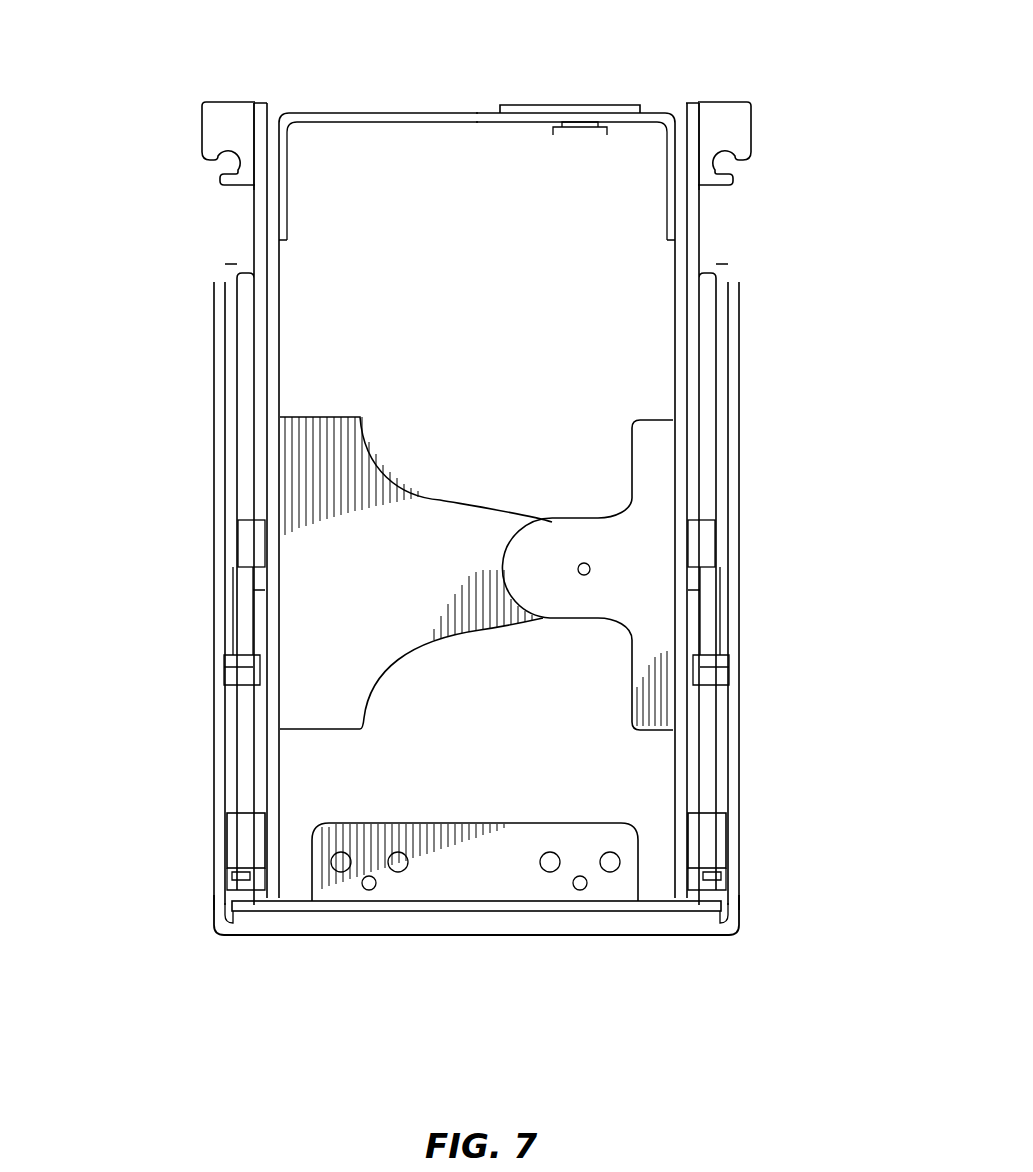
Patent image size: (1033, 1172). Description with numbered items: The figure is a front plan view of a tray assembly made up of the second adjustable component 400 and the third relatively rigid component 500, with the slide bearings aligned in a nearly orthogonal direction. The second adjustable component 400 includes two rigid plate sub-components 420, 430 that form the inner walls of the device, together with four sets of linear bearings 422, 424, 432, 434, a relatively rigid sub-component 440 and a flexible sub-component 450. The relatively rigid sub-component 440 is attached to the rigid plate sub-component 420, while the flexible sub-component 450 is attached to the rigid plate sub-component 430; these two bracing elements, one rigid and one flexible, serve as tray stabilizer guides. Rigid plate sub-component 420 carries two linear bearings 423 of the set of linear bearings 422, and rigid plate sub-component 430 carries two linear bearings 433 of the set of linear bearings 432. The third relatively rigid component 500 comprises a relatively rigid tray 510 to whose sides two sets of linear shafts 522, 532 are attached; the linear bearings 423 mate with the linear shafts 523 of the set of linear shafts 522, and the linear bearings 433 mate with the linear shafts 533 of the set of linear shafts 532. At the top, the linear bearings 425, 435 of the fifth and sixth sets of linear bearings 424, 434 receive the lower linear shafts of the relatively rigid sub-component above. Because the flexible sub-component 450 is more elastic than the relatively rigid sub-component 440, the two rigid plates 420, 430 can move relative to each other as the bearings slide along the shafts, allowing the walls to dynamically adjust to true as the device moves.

The second adjustable component 400 is at (437, 108).
The rigid plate sub-component 420 is at (275, 340).
The rigid plate sub-component 430 is at (684, 335).
The set of linear bearings 422 is at (255, 830).
The set of linear bearings 432 is at (718, 838).
The linear bearings 423 is at (250, 545).
The linear bearings 433 is at (703, 548).
The set of linear bearings 424 is at (262, 168).
The set of linear bearings 434 is at (692, 172).
The linear bearing 425 is at (210, 116).
The linear bearing 435 is at (745, 125).
The relatively rigid sub-component 440 is at (420, 520).
The flexible sub-component 450 is at (628, 520).
The third relatively rigid component 500 is at (465, 940).
The relatively rigid tray 510 is at (733, 935).
The set of linear shafts 522 is at (233, 780).
The linear shafts 523 is at (237, 500).
The set of linear shafts 532 is at (712, 685).
The linear shafts 533 is at (715, 500).